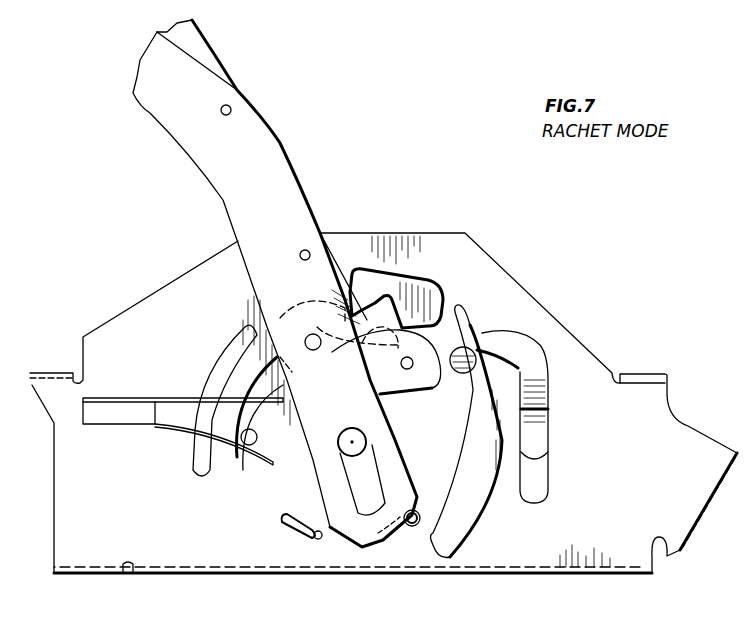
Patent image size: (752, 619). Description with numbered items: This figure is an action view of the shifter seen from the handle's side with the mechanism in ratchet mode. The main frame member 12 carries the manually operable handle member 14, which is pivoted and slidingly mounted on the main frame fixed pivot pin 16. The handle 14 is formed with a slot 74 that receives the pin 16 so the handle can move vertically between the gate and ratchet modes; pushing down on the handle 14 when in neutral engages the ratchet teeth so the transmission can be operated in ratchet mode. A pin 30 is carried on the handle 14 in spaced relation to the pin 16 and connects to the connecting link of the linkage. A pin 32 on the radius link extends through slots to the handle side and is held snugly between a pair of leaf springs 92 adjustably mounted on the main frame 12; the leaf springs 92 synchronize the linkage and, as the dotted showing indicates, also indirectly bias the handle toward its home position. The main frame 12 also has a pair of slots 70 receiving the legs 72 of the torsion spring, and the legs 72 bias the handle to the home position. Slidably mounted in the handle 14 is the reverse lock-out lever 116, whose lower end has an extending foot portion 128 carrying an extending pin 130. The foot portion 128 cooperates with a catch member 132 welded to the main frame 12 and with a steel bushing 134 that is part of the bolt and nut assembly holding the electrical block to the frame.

The main frame member 12 is at (140, 306).
The manually operable handle member 14 is at (210, 163).
The reverse lock-out lever 116 is at (198, 42).
The main frame fixed pivot pin 16 is at (357, 442).
The pin 30 is at (313, 350).
The pin 32 is at (257, 440).
The slots 70 is at (292, 522).
The legs 72 is at (320, 539).
The slot 74 is at (353, 480).
The leaf springs 92 is at (177, 446).
The foot portion 128 is at (407, 378).
The pin 130 is at (410, 367).
The catch member 132 is at (523, 360).
The bushing 134 is at (470, 350).